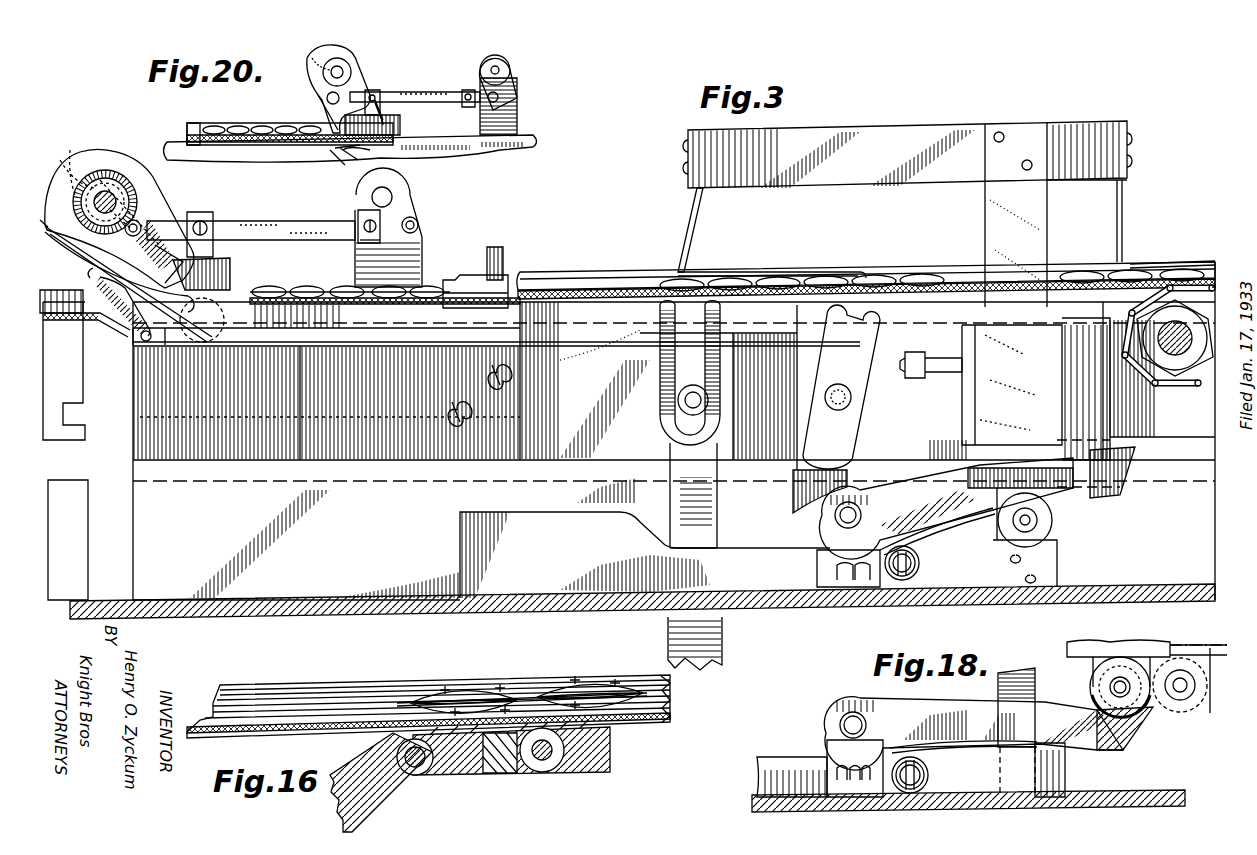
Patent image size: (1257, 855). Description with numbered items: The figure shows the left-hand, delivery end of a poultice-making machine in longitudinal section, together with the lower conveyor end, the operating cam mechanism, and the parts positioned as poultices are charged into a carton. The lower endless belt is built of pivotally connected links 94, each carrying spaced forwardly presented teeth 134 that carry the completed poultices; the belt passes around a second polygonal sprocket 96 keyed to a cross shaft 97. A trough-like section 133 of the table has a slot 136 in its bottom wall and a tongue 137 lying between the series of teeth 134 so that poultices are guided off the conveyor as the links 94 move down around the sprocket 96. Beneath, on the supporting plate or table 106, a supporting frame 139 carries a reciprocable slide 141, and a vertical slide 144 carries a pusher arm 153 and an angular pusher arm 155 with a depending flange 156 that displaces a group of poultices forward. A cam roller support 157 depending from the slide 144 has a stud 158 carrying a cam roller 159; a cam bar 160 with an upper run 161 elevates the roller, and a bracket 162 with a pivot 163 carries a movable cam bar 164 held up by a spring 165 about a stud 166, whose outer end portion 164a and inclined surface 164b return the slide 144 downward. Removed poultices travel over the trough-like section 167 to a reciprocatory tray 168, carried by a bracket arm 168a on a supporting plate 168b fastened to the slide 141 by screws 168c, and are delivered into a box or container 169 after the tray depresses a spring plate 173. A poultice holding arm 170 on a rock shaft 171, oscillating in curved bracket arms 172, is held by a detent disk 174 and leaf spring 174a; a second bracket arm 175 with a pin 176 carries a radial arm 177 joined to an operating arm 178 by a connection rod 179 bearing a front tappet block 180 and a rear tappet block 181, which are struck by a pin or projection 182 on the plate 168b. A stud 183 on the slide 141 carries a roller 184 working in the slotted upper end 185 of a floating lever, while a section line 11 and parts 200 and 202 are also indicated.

In FIG. 3, the section line 11 is at (992, 80).
In FIG. 16, the links 94 is at (455, 770).
In FIG. 3, the second polygonal sprocket 96 is at (1187, 365).
In FIG. 3, the cross shaft 97 is at (1170, 355).
In FIG. 3, the supporting plate or table 106 is at (375, 610).
In FIG. 18, the supporting plate or table 106 is at (1128, 795).
In FIG. 16, the trough-like section 133 is at (293, 715).
In FIG. 16, the teeth 134 is at (490, 760).
In FIG. 16, the slot 136 is at (655, 725).
In FIG. 16, the tongue 137 is at (390, 740).
In FIG. 3, the supporting frame 139 is at (325, 544).
In FIG. 3, the slide 141 is at (562, 440).
In FIG. 3, the vertical slide 144 is at (1005, 389).
In FIG. 3, the pusher arm 153 is at (1155, 266).
In FIG. 3, the angular pusher arm 155 is at (690, 232).
In FIG. 3, the depending flange 156 is at (865, 275).
In FIG. 18, the cam roller support 157 is at (1095, 662).
In FIG. 18, the stud 158 is at (1170, 712).
In FIG. 18, the cam roller 159 is at (1122, 684).
In FIG. 3, the cam bar 160 is at (562, 592).
In FIG. 18, the cam bar 160 is at (770, 782).
In FIG. 3, the upper run 161 is at (528, 510).
In FIG. 3, the bracket 162 is at (815, 548).
In FIG. 18, the bracket 162 is at (830, 748).
In FIG. 3, the pivot 163 is at (838, 517).
In FIG. 18, the pivot 163 is at (845, 718).
In FIG. 3, the movable cam bar 164 is at (935, 490).
In FIG. 18, the movable cam bar 164 is at (913, 712).
In FIG. 3, the outer end portion 164a is at (1050, 518).
In FIG. 18, the outer end portion 164a is at (1100, 745).
In FIG. 3, the inclined surface 164b is at (1128, 475).
In FIG. 18, the inclined surface 164b is at (1125, 742).
In FIG. 3, the spring 165 is at (945, 535).
In FIG. 18, the spring 165 is at (958, 750).
In FIG. 3, the stud 166 is at (912, 585).
In FIG. 18, the stud 166 is at (925, 782).
In FIG. 3, the trough-like section 167 is at (582, 290).
In FIG. 20, the reciprocatory tray 168 is at (322, 140).
In FIG. 20, the bracket arm 168a is at (470, 278).
In FIG. 3, the supporting plate 168b is at (505, 404).
In FIG. 3, the screws 168c is at (480, 410).
In FIG. 20, the box or container 169 is at (222, 125).
In FIG. 20, the poultice holding arm 170 is at (330, 150).
In FIG. 20, the rock shaft 171 is at (334, 72).
In FIG. 20, the curved bracket arms 172 is at (365, 90).
In FIG. 20, the spring plate 173 is at (345, 160).
In FIG. 20, the detent disk 174 is at (345, 56).
In FIG. 20, the leaf spring 174a is at (330, 100).
In FIG. 20, the second bracket arm 175 is at (510, 123).
In FIG. 20, the pin 176 is at (390, 192).
In FIG. 20, the radial arm 177 is at (500, 97).
In FIG. 20, the operating arm 178 is at (328, 95).
In FIG. 20, the connection rod 179 is at (463, 92).
In FIG. 20, the front tappet block 180 is at (375, 90).
In FIG. 20, the rear tappet block 181 is at (468, 107).
In FIG. 20, the pin or projection 182 is at (388, 120).
In FIG. 3, the stud 183 is at (684, 400).
In FIG. 3, the roller 184 is at (688, 396).
In FIG. 3, the slotted upper end 185 is at (668, 360).
In FIG. 3, the cam 200 is at (800, 490).
In FIG. 3, the pawl 202 is at (838, 384).